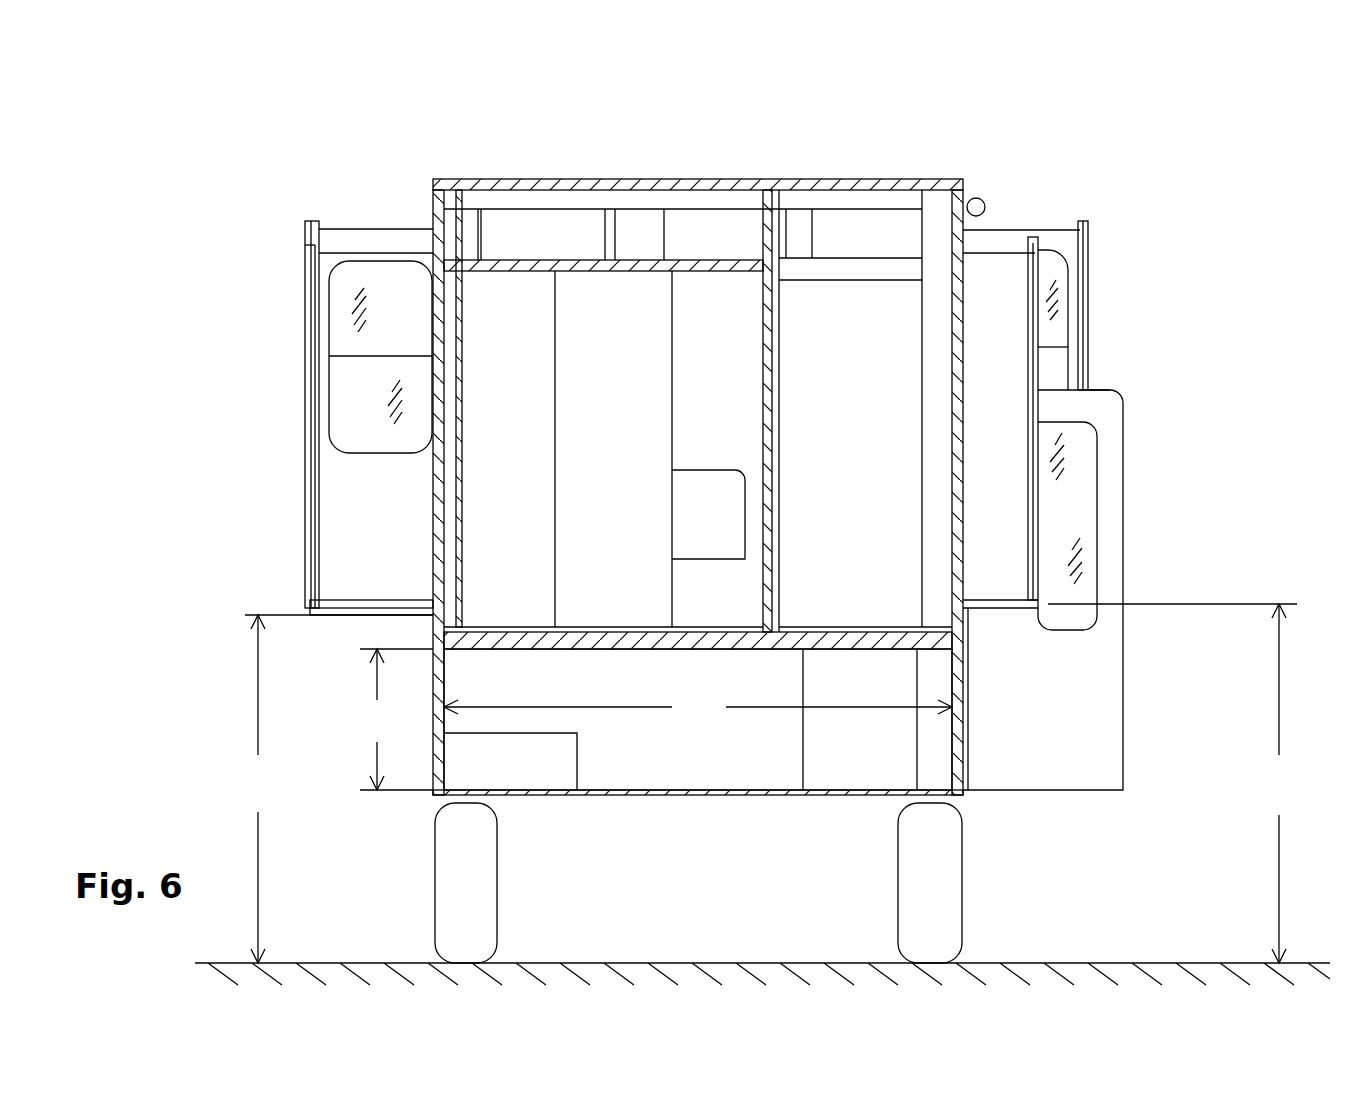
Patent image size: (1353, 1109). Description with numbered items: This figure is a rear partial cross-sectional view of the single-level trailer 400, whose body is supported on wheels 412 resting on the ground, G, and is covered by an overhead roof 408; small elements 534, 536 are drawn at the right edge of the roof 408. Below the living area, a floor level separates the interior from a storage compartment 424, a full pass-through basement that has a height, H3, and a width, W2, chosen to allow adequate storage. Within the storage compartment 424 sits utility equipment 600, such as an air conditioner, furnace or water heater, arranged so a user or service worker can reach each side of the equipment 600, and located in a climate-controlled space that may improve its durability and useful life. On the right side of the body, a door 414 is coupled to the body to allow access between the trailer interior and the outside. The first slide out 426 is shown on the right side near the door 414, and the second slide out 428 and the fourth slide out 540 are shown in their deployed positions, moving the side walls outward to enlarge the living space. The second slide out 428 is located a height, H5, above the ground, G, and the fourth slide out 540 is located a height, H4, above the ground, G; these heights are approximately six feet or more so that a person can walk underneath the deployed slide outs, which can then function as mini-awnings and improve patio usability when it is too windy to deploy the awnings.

The single-level trailer 400 is at (268, 170).
The overhead roof 408 is at (679, 168).
The roof rail 534 is at (1007, 143).
The roof rail 536 is at (972, 197).
The first slide out 426 is at (995, 270).
The second slide out 428 is at (1082, 310).
The fourth slide out 540 is at (337, 535).
The door 414 is at (1105, 715).
The wheels 412 is at (430, 884).
The utility equipment 600 is at (518, 773).
The storage compartment 424 is at (659, 760).
The ground G is at (759, 958).
The width W2 is at (698, 712).
The height H3 is at (396, 719).
The height H4 is at (338, 789).
The height H5 is at (1175, 783).